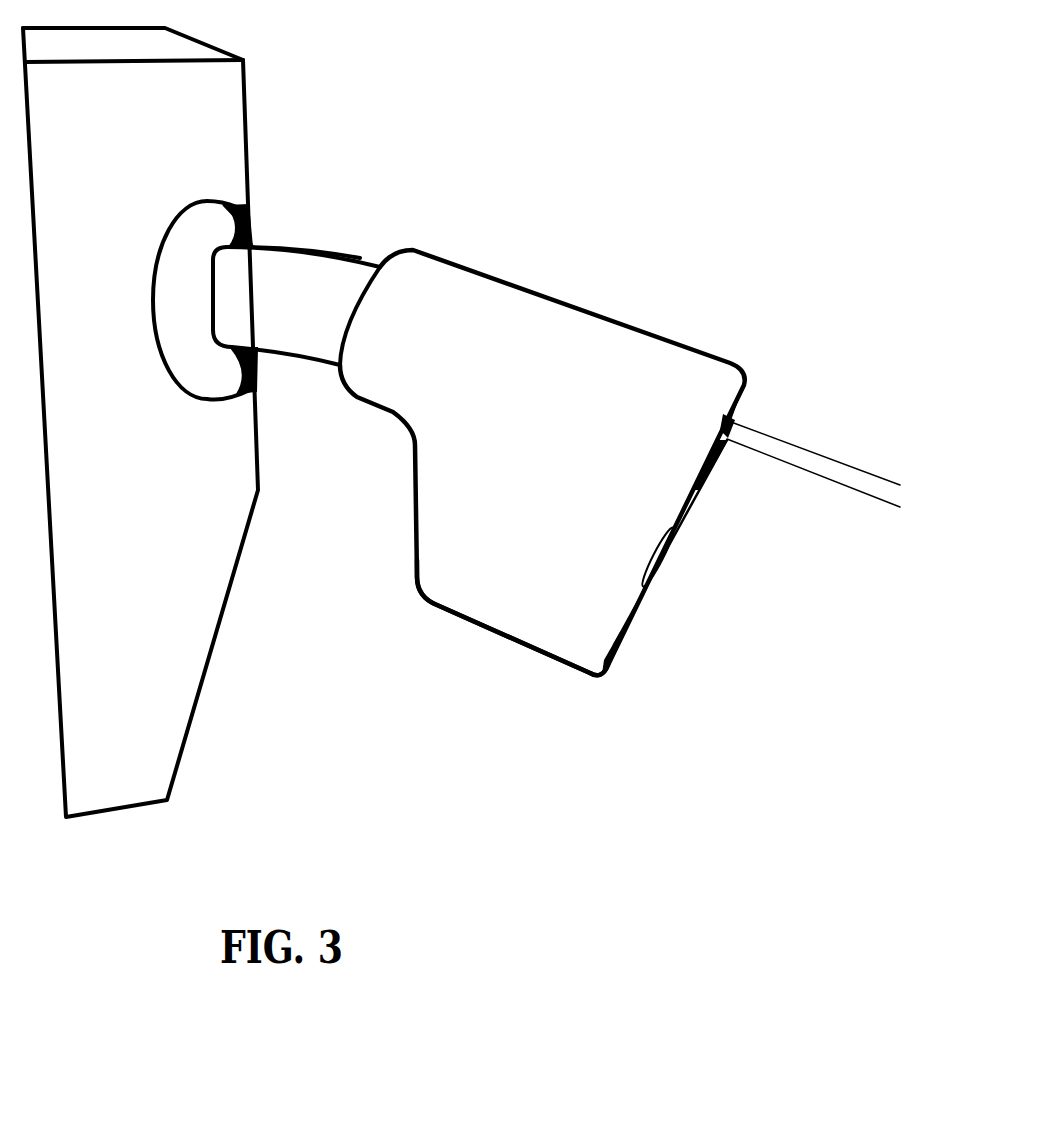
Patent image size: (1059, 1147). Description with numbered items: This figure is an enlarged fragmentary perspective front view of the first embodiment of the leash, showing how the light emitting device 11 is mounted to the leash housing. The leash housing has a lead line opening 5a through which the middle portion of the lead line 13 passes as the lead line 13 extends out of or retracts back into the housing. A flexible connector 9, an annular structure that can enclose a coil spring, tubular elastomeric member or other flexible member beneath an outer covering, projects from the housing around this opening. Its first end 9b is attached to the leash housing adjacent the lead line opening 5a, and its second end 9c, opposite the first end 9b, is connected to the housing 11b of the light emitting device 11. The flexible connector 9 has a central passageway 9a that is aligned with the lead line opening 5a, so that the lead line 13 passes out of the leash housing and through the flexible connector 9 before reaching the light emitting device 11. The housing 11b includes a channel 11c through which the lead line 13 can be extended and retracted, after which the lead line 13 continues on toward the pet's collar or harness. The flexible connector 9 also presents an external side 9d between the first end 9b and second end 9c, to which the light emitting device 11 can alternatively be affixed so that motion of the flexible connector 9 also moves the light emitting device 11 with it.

The lead line opening 5a is at (181, 383).
The flexible connector 9 is at (313, 301).
The central passageway 9a is at (283, 293).
The first end 9b is at (237, 238).
The second end 9c is at (377, 267).
The external side 9d is at (320, 267).
The light emitting device 11 is at (611, 517).
The housing 11b is at (463, 578).
The channel 11c is at (737, 417).
The lead line 13 is at (847, 493).